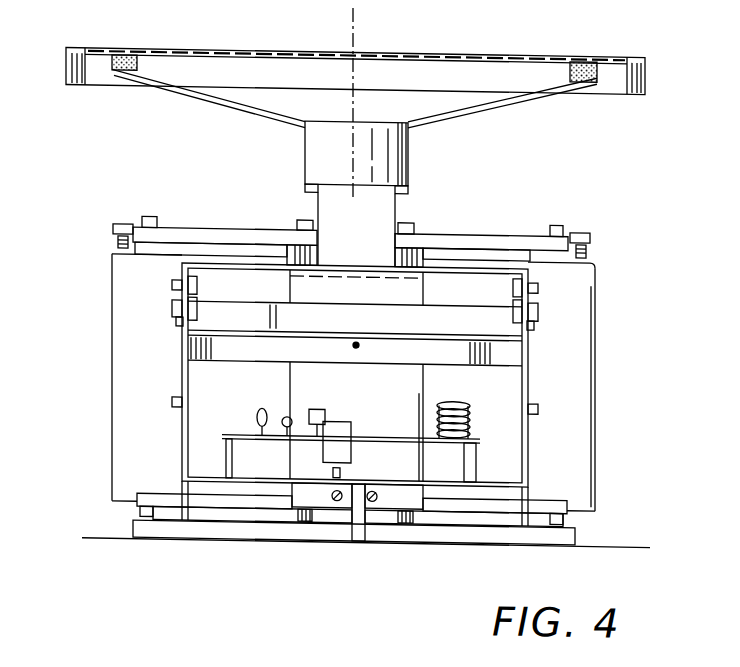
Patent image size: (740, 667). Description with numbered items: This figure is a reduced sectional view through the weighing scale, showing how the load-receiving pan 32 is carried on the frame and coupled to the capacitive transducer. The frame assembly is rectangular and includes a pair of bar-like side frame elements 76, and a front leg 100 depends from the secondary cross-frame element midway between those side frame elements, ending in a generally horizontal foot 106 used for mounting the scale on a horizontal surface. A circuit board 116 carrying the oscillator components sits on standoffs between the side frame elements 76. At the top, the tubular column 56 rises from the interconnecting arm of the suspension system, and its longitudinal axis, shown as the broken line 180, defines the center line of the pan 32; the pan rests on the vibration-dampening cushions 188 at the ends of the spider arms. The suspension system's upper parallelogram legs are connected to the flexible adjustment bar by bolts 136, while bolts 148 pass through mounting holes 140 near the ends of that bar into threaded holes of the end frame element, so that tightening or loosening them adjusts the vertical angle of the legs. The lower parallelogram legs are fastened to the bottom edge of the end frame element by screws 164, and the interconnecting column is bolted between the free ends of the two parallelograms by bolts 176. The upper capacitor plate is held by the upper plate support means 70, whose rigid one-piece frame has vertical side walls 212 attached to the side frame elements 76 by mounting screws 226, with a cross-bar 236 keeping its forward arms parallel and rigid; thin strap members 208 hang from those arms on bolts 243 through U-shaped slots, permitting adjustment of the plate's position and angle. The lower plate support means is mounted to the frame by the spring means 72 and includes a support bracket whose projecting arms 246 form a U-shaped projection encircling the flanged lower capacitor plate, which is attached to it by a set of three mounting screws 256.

The pan 32 is at (327, 51).
The tubular column 56 is at (409, 146).
The upper plate support means 70 is at (203, 266).
The spring means 72 is at (518, 314).
The side frame elements 76 is at (190, 445).
The front leg 100 is at (355, 526).
The foot 106 is at (376, 532).
The circuit board 116 is at (407, 437).
The bolts 136 is at (147, 220).
The mounting hole 140 is at (19, 9).
The bolts 148 is at (114, 240).
The screws 164 is at (138, 519).
The bolts 176 is at (302, 221).
The broken line 180 is at (355, 27).
The vibration-dampening cushion 188 is at (122, 59).
The strap members 208 is at (176, 306).
The vertical side walls 212 is at (182, 357).
The mounting screws 226 is at (172, 403).
The cross-bar 236 is at (478, 266).
The bolt 243 is at (176, 289).
The projecting arms 246 is at (502, 354).
The mounting screws 256 is at (357, 346).